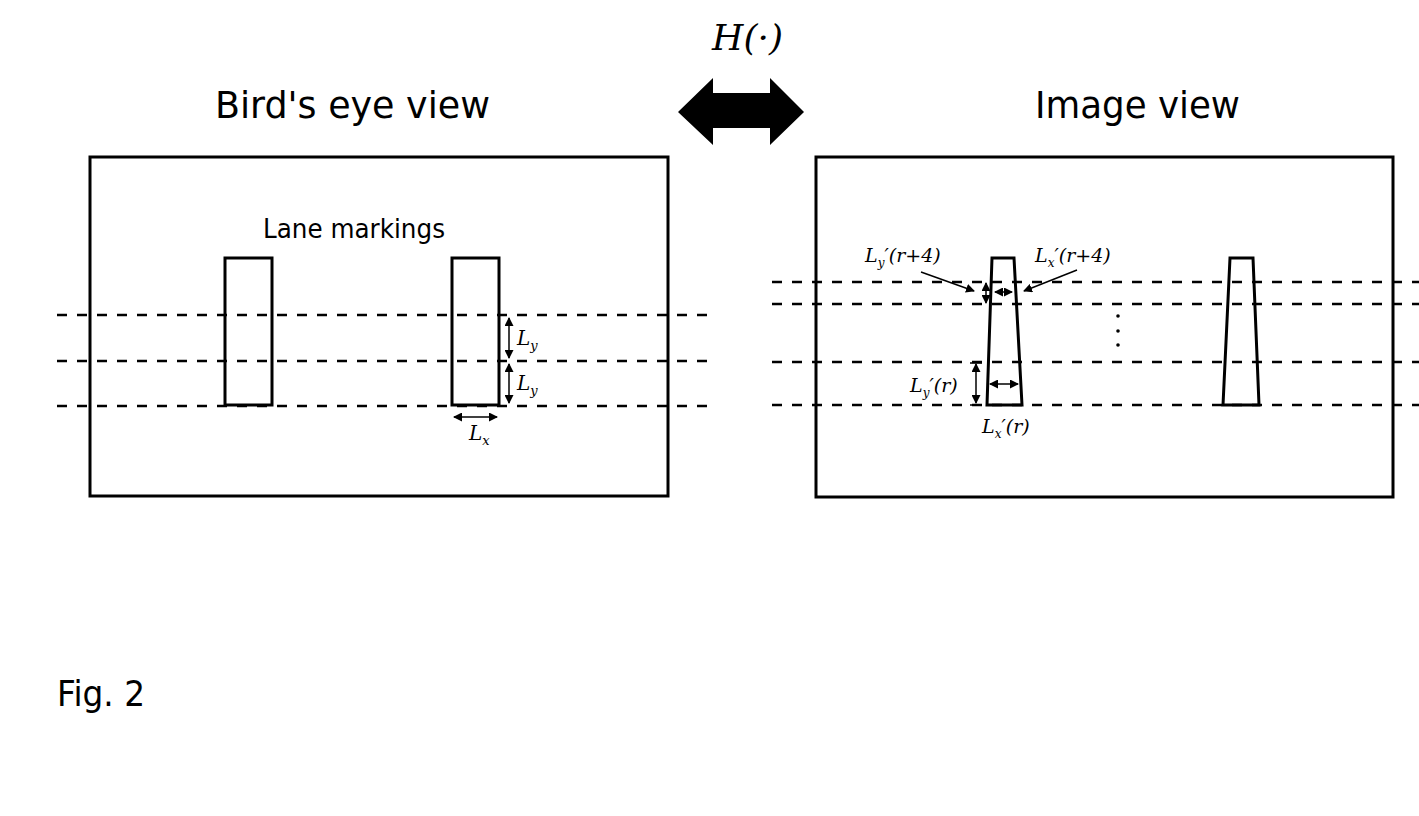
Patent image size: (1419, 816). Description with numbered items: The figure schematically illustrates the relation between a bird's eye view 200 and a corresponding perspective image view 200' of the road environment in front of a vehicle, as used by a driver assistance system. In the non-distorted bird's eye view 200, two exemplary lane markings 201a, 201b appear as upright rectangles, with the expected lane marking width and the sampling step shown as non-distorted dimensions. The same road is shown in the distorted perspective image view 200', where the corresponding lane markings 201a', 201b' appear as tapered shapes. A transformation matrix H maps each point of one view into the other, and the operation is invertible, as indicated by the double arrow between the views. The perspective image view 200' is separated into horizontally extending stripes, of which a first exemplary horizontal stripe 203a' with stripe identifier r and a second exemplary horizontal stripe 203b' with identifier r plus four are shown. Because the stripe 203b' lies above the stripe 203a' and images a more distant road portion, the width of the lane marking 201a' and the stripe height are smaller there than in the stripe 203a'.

The bird's eye view 200 is at (386, 285).
The perspective image view 200' is at (1095, 286).
The lane marking 201a is at (241, 300).
The lane marking 201b is at (494, 300).
The lane marking 201a' is at (1020, 300).
The lane marking 201b' is at (1257, 298).
The first exemplary horizontal stripe 203a' is at (1095, 349).
The second exemplary horizontal stripe 203b' is at (1095, 262).